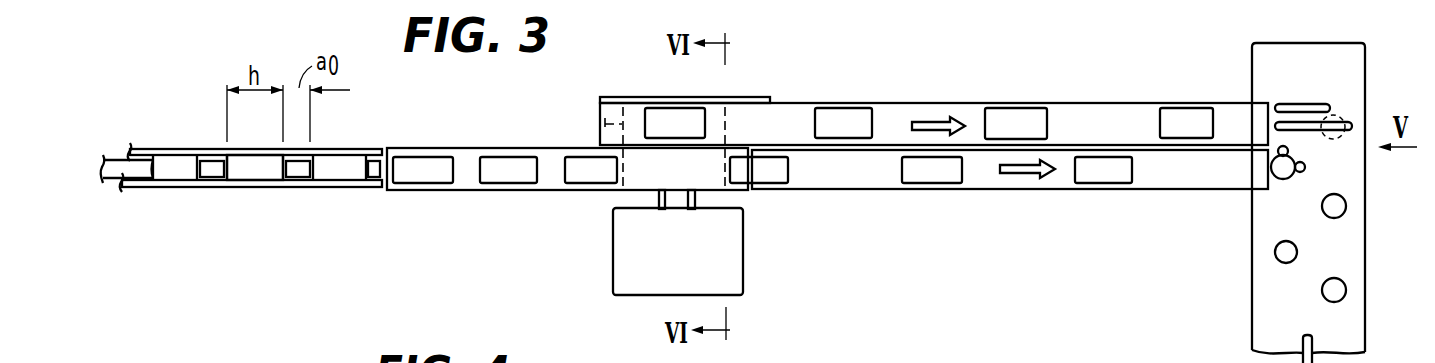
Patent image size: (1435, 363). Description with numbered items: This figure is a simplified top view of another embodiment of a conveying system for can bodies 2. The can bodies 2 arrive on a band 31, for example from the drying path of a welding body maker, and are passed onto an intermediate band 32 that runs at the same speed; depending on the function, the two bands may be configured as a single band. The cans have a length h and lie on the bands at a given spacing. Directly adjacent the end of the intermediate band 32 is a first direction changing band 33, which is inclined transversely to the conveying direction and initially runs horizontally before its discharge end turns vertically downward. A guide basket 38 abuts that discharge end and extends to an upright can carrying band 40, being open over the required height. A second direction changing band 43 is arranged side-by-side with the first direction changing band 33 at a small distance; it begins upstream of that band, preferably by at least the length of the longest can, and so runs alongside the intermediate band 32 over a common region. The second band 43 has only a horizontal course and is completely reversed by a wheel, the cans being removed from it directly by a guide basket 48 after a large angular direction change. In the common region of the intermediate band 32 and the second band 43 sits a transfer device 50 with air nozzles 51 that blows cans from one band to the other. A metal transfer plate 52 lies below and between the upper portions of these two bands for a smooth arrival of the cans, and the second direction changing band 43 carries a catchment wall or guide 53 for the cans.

The can bodies 2 is at (250, 177).
The band 31 is at (117, 179).
The intermediate band 32 is at (467, 152).
The first direction changing band 33 is at (1002, 188).
The guide basket 38 is at (1306, 167).
The upright can carrying band 40 is at (1258, 295).
The second direction changing band 43 is at (977, 103).
The guide basket 48 is at (1345, 122).
The transfer device 50 is at (622, 261).
The air nozzles 51 is at (658, 196).
The metal transfer plate 52 is at (597, 128).
The catchment wall or guide 53 is at (740, 97).